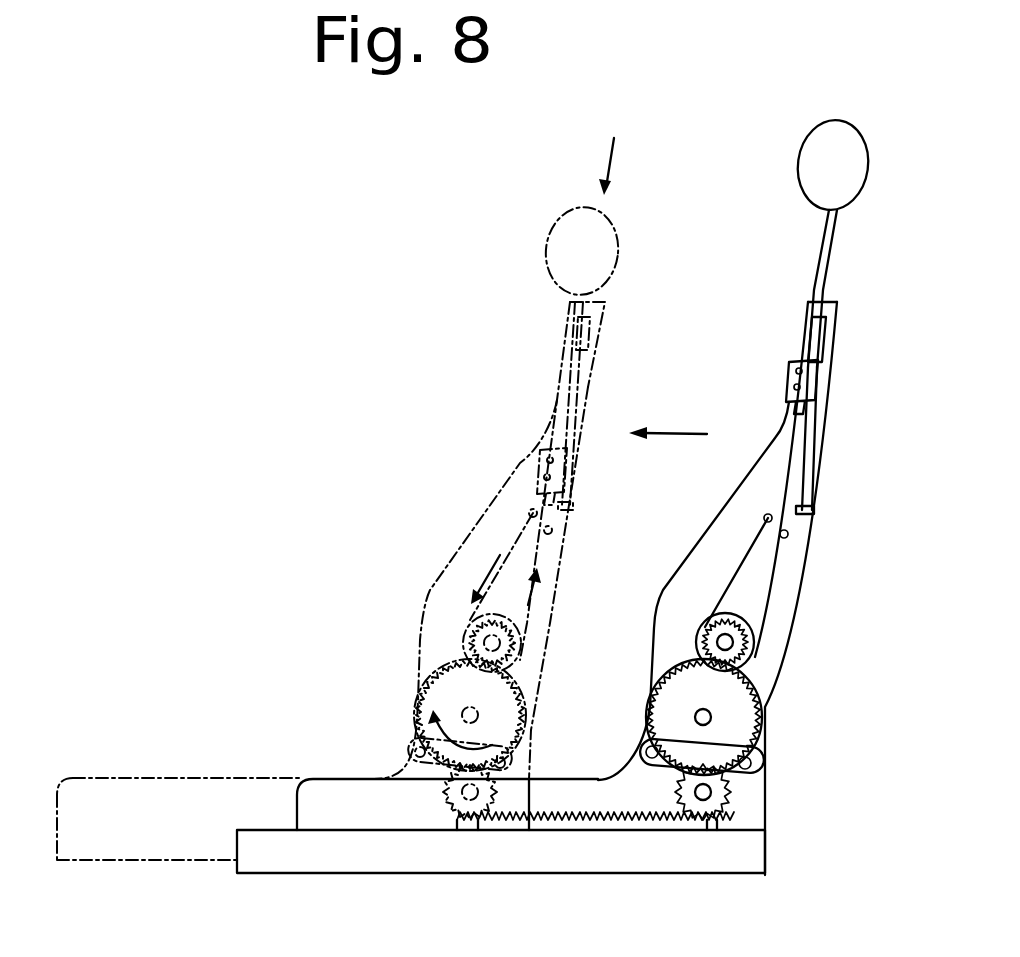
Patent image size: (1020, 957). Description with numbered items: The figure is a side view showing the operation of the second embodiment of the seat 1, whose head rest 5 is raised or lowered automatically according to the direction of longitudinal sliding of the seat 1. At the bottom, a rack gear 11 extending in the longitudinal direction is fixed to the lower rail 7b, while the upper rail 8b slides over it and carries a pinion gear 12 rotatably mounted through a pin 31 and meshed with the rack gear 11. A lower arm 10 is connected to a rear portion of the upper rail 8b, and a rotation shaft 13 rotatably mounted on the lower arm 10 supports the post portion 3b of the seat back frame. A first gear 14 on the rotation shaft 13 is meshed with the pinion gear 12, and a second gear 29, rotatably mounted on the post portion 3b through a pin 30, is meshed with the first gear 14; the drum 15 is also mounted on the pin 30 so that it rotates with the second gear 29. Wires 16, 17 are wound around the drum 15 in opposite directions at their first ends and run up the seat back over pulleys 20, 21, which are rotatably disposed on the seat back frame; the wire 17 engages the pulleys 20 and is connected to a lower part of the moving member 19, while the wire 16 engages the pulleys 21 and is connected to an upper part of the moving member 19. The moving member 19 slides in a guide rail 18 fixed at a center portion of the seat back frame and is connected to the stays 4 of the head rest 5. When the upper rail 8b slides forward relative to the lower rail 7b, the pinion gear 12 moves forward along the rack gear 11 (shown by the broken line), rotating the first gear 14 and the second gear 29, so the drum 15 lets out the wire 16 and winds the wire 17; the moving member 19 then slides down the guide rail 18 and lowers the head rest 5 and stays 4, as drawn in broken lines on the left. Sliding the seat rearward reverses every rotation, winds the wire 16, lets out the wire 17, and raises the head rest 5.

The seat 1 is at (854, 331).
The post portion 3b is at (731, 534).
The stays 4 is at (822, 268).
The head rest 5 is at (813, 178).
The lower rail 7b is at (325, 862).
The upper rail 8b is at (320, 793).
The lower arm 10 is at (762, 750).
The rack gear 11 is at (607, 825).
The pinion gear 12 is at (720, 798).
The rotation shaft 13 is at (696, 717).
The first gear 14 is at (741, 723).
The drum 15 is at (749, 624).
The wire 16 is at (776, 584).
The wire 17 is at (732, 583).
The guide rail 18 is at (816, 465).
The moving member 19 is at (815, 390).
The pulleys 20 is at (784, 534).
The pulleys 21 is at (768, 518).
The second gear 29 is at (733, 657).
The pin 30 is at (718, 642).
The pin 31 is at (703, 800).